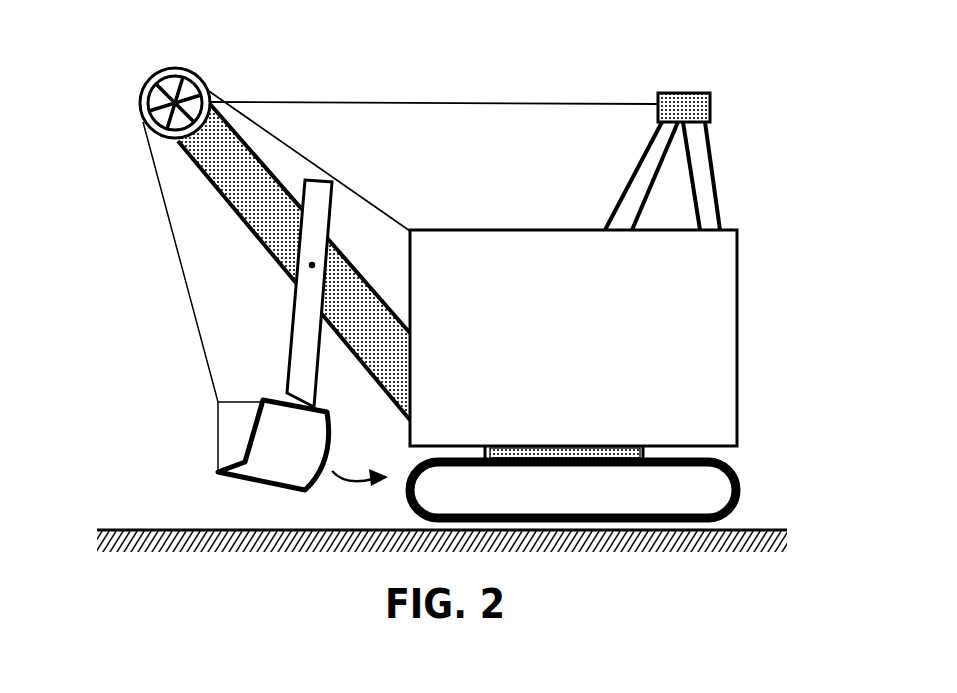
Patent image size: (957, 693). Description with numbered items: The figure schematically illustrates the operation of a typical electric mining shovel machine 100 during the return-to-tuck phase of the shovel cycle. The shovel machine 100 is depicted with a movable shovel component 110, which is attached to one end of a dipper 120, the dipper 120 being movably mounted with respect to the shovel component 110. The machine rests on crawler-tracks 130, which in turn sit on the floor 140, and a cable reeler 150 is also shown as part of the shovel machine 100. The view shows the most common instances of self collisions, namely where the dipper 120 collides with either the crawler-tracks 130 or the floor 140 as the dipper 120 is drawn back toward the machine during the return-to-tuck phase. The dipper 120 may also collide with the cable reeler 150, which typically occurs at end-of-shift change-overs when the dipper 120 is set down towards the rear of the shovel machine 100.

The electric mining shovel machine 100 is at (692, 43).
The movable shovel component 110 is at (242, 458).
The dipper 120 is at (203, 293).
The crawler-tracks 130 is at (745, 490).
The floor 140 is at (225, 548).
The cable reeler 150 is at (194, 69).